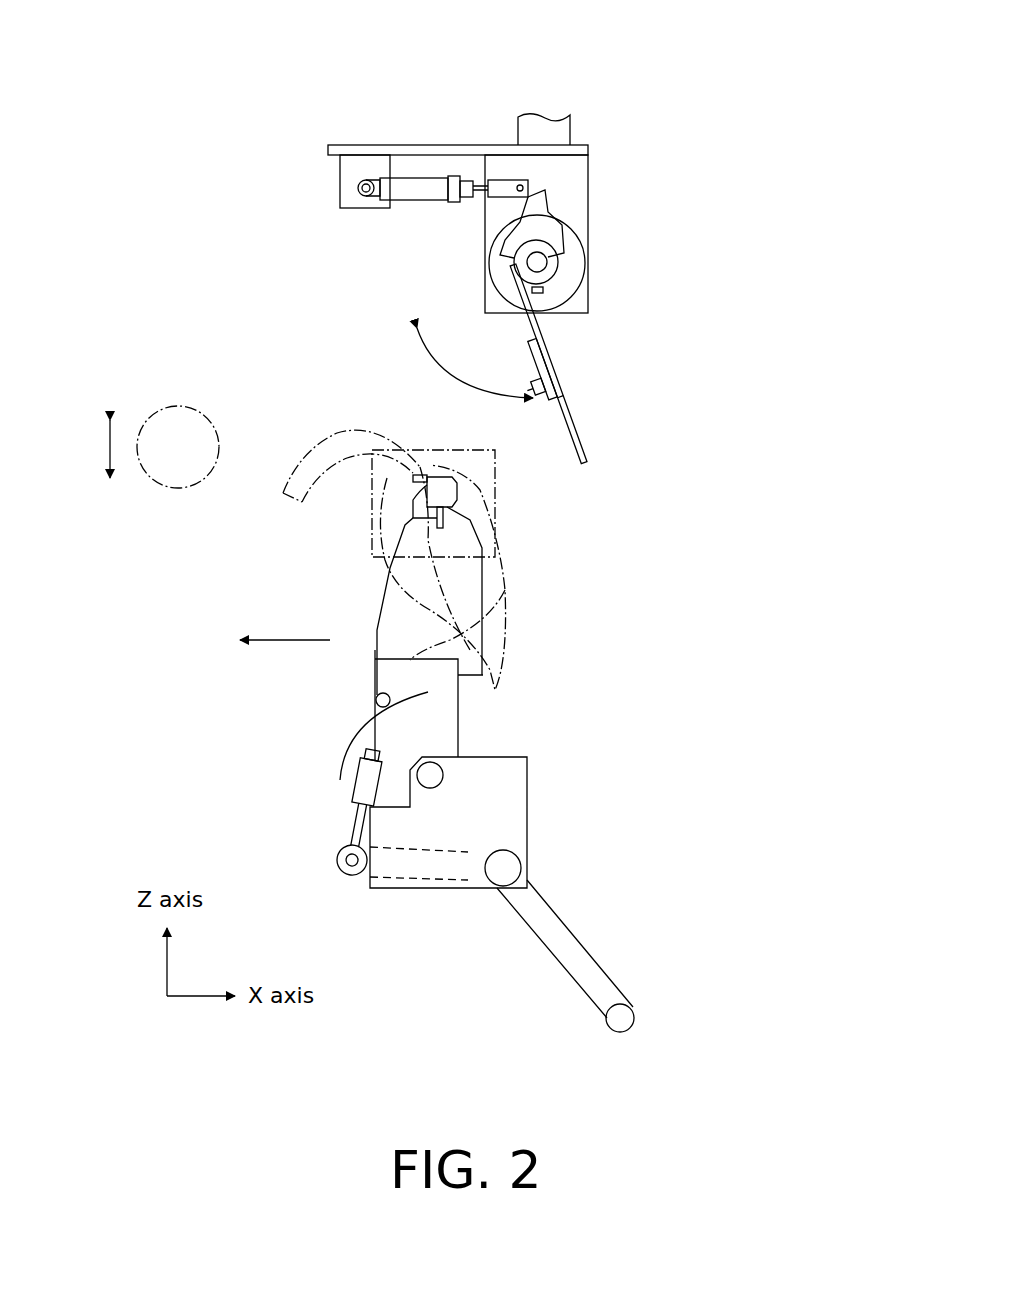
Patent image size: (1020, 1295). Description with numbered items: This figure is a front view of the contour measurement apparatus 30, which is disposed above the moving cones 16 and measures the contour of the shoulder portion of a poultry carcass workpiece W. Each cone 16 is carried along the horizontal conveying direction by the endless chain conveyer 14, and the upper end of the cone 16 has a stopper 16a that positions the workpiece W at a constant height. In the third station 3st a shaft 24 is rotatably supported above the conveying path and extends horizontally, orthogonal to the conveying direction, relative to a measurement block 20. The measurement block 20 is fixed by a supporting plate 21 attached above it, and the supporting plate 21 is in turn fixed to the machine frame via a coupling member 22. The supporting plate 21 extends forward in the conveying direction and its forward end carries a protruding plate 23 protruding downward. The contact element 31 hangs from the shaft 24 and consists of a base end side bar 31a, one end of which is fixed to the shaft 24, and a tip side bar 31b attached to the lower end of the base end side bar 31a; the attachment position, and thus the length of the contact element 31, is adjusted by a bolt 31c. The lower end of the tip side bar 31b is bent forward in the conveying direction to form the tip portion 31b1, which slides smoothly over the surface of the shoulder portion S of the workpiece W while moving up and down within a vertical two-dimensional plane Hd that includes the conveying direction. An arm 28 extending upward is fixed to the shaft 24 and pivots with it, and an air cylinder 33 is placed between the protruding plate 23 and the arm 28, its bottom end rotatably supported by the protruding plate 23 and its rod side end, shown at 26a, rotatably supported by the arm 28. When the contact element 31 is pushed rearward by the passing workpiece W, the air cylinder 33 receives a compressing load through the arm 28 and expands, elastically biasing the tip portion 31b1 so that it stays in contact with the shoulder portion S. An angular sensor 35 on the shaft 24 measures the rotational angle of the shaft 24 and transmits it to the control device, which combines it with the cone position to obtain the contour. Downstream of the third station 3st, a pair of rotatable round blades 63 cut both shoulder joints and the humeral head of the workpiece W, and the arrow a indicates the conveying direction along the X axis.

The contour measurement apparatus 30 is at (705, 122).
The third station 3st is at (588, 97).
The supporting plate 21 is at (578, 150).
The coupling member 22 is at (572, 128).
The protruding plate 23 is at (350, 178).
The measurement block 20 is at (590, 202).
The air cylinder 33 is at (418, 173).
The rod end 26a is at (503, 182).
The arm 28 is at (527, 210).
The shaft 24 is at (538, 262).
The angular sensor 35 is at (538, 293).
The contact element 31 is at (457, 338).
The base end side bar 31a is at (487, 367).
The tip side bar 31b is at (480, 422).
The bolt 31c is at (455, 382).
The tip portion 31b1 is at (425, 476).
The two-dimensional plane Hd is at (495, 478).
The shoulder portion S is at (365, 440).
The workpiece W is at (503, 542).
The cone 16 is at (372, 608).
The stopper 16a is at (410, 495).
The endless chain conveyer 14 is at (622, 1018).
The round blades 63 is at (208, 418).
The direction a is at (285, 625).